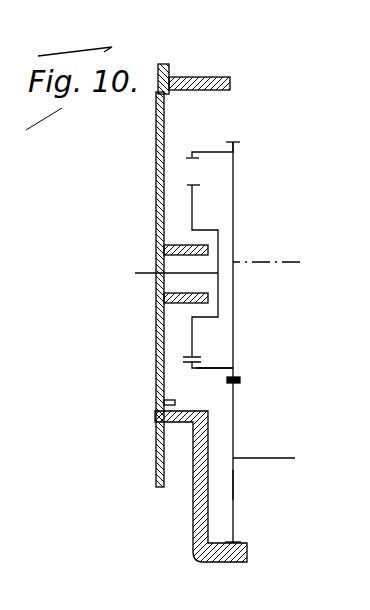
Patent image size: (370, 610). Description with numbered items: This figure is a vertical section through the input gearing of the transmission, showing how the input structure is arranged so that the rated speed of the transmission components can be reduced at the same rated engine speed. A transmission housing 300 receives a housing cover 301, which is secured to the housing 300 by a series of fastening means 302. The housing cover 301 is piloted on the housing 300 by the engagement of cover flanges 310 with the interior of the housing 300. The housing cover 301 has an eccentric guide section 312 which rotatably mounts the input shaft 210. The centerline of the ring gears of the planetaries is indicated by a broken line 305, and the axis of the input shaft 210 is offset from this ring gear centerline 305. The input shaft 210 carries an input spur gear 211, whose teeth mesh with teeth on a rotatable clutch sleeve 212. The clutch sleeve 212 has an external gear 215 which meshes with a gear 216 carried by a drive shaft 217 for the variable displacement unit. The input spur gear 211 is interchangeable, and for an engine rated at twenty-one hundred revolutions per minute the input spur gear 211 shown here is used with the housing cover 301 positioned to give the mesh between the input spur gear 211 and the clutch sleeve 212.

The transmission housing 300 is at (222, 566).
The housing cover 301 is at (157, 457).
The fastening means 302 is at (158, 90).
The ring gear centerline 305 is at (263, 261).
The cover flanges 310 is at (171, 92).
The eccentric guide section 312 is at (161, 256).
The input shaft 210 is at (152, 277).
The input spur gear 211 is at (190, 340).
The clutch sleeve 212 is at (209, 370).
The external gear 215 is at (236, 374).
The gear 216 is at (233, 485).
The drive shaft 217 is at (265, 455).